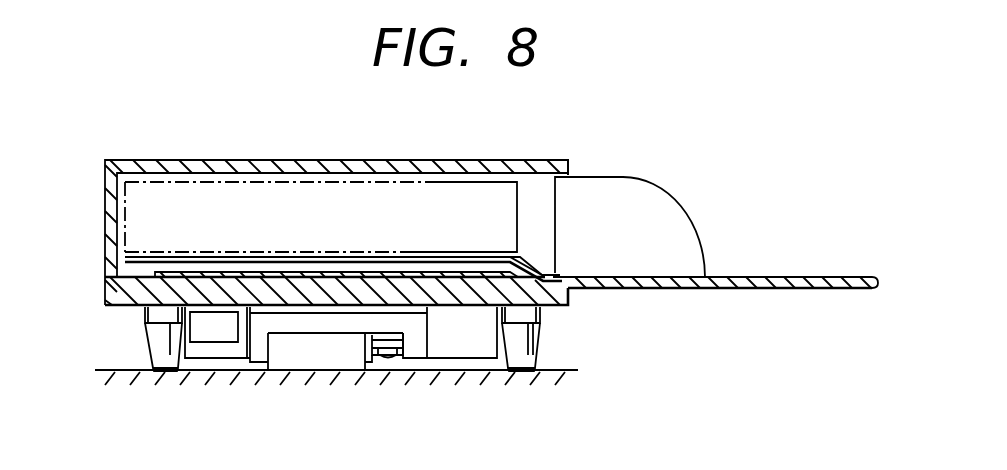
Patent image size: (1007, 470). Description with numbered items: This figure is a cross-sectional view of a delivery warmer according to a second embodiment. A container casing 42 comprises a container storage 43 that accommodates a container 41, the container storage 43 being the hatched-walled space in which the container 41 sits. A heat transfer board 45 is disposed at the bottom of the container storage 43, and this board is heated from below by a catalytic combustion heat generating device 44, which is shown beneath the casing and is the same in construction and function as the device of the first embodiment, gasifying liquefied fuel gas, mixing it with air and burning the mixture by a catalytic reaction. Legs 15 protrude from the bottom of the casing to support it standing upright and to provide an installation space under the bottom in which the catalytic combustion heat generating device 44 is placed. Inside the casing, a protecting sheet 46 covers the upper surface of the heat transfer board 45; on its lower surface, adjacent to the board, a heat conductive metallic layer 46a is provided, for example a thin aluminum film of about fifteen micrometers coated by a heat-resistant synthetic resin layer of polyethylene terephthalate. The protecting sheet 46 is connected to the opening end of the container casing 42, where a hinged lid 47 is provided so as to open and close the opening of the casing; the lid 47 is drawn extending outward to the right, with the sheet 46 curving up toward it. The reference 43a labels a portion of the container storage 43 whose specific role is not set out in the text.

The legs 15 is at (523, 332).
The container 41 is at (250, 181).
The container casing 42 is at (360, 161).
The container storage 43 is at (453, 174).
The inner surface of top wall 43a is at (412, 176).
The catalytic combustion heat generating device 44 is at (307, 350).
The heat transfer board 45 is at (242, 275).
The protecting sheet 46 is at (470, 252).
The heat conductive metallic layer 46a is at (420, 264).
The hinged lid 47 is at (735, 289).